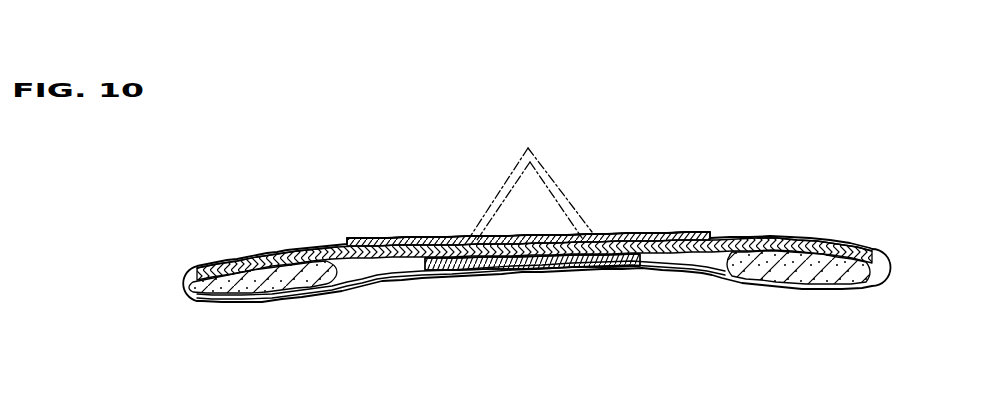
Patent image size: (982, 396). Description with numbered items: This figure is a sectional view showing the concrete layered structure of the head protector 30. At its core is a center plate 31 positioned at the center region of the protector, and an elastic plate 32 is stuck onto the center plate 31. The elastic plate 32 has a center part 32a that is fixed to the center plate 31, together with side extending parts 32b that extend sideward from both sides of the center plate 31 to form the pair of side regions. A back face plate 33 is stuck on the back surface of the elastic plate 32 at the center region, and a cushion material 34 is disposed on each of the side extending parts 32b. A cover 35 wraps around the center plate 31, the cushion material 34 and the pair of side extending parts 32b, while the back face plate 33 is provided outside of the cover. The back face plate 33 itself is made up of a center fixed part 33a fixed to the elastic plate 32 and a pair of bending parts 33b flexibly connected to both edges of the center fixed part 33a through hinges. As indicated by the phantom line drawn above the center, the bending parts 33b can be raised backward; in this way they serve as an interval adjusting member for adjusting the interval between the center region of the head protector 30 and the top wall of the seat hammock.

The head protector 30 is at (684, 143).
The center plate 31 is at (524, 264).
The elastic plate 32 is at (723, 247).
The center part 32a is at (573, 263).
The side extending parts 32b is at (277, 258).
The back face plate 33 is at (622, 236).
The center fixed part 33a is at (522, 238).
The bending parts 33b is at (367, 240).
The cushion material 34 is at (267, 292).
The cover 35 is at (377, 282).